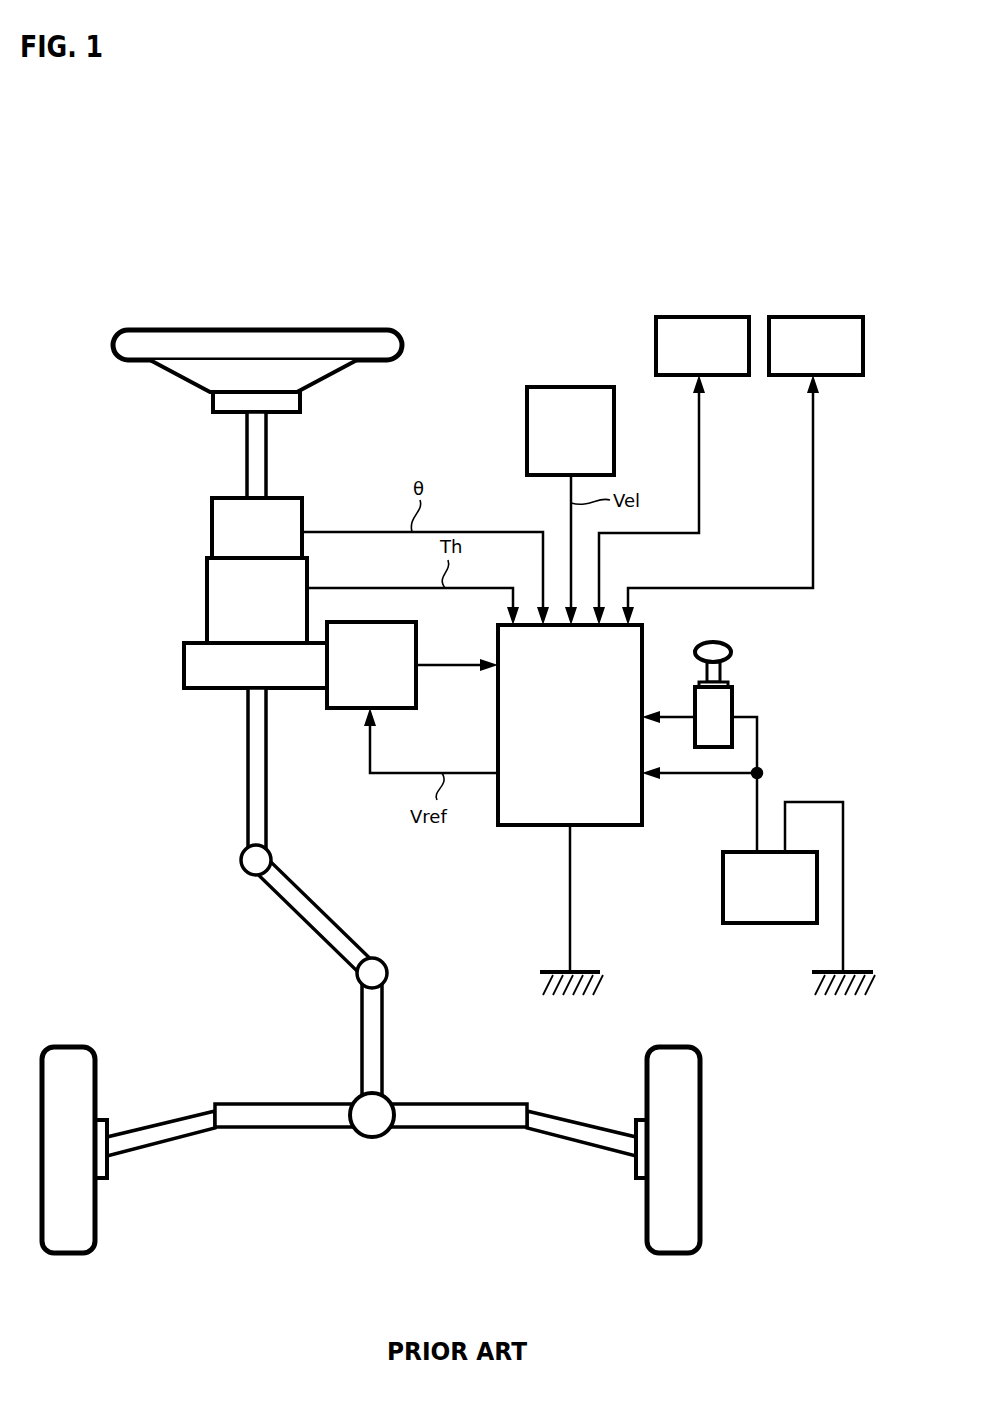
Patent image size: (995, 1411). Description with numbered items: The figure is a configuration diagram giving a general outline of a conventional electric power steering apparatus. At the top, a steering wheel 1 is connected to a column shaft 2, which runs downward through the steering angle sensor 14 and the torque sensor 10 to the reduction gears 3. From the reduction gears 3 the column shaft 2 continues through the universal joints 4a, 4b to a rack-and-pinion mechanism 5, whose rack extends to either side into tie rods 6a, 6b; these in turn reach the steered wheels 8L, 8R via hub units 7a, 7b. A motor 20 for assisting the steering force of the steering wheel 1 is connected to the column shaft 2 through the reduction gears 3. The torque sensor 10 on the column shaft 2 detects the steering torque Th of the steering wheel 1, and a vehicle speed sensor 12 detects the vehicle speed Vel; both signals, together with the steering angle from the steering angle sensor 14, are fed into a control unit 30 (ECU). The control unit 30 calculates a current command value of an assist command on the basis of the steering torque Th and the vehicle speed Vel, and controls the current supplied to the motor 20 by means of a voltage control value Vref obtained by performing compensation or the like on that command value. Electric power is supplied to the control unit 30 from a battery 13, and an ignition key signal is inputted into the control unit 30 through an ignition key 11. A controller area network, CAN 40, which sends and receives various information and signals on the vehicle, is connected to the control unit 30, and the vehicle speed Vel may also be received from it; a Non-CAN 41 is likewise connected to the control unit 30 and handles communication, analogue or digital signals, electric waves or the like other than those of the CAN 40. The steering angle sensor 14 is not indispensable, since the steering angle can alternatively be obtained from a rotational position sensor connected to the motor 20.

The steering wheel 1 is at (402, 343).
The column shaft 2 is at (247, 460).
The reduction gears 3 is at (184, 672).
The universal joint 4a is at (275, 895).
The universal joint 4b is at (357, 978).
The rack-and-pinion mechanism 5 is at (390, 1098).
The tie rod 6a is at (143, 1126).
The tie rod 6b is at (562, 1126).
The hub unit 7a is at (107, 1172).
The hub unit 7b is at (636, 1172).
The steered wheel 8L is at (95, 1240).
The steered wheel 8R is at (647, 1240).
The torque sensor 10 is at (207, 590).
The ignition key 11 is at (732, 652).
The vehicle speed sensor 12 is at (614, 400).
The battery 13 is at (723, 880).
The steering angle sensor 14 is at (212, 525).
The motor 20 is at (416, 630).
The control unit (ECU) 30 is at (646, 628).
The controller area network (CAN) 40 is at (843, 317).
The Non-CAN 41 is at (728, 317).